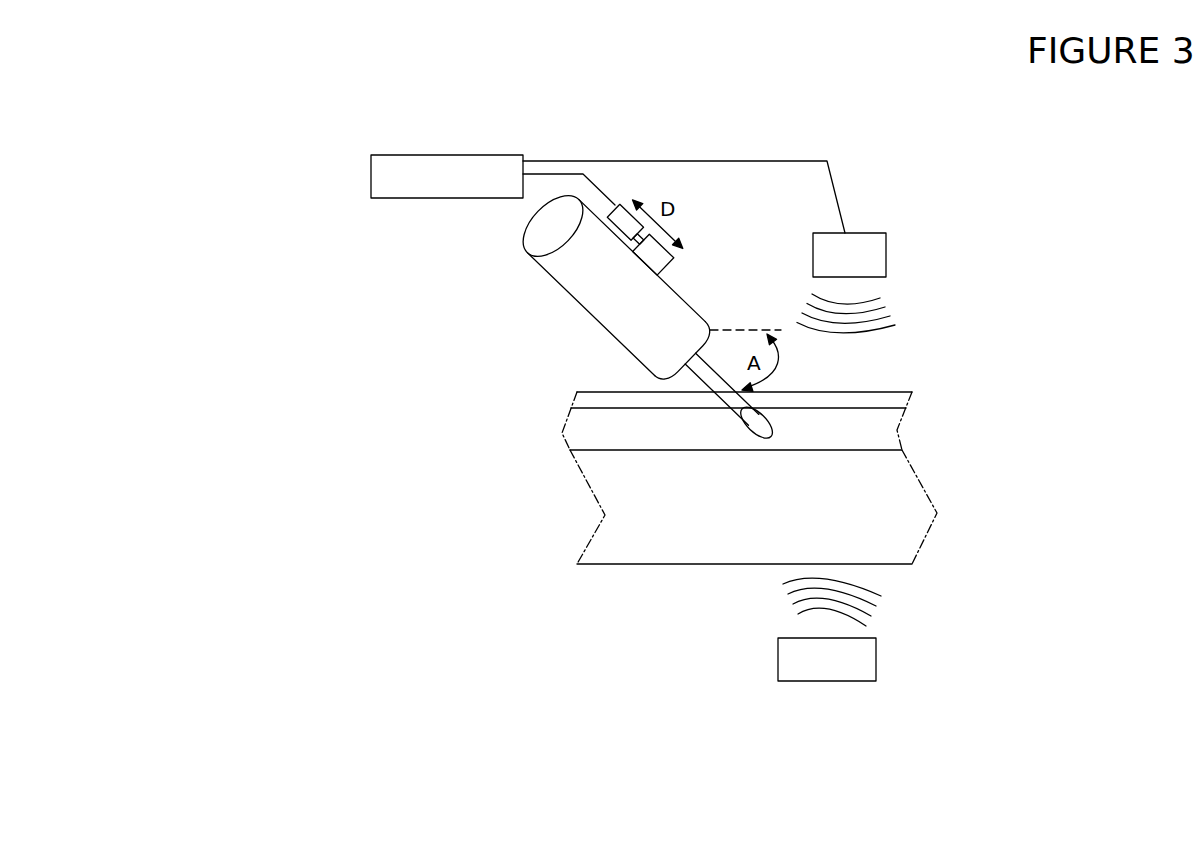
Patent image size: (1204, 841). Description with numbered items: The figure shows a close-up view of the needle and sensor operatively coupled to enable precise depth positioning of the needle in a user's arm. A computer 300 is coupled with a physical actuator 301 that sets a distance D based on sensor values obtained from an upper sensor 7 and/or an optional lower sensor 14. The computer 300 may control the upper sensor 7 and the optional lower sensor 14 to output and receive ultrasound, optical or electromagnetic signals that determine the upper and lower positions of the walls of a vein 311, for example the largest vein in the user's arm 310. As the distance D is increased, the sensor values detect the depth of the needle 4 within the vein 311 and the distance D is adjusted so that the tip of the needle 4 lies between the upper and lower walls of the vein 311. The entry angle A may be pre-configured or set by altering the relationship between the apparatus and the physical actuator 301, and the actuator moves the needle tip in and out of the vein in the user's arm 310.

The computer 300 is at (361, 181).
The physical actuator 301 is at (657, 258).
The upper sensor 7 is at (898, 253).
The needle 4 is at (693, 382).
The vein 311 is at (900, 432).
The user's arm 310 is at (937, 513).
The lower sensor 14 is at (888, 657).